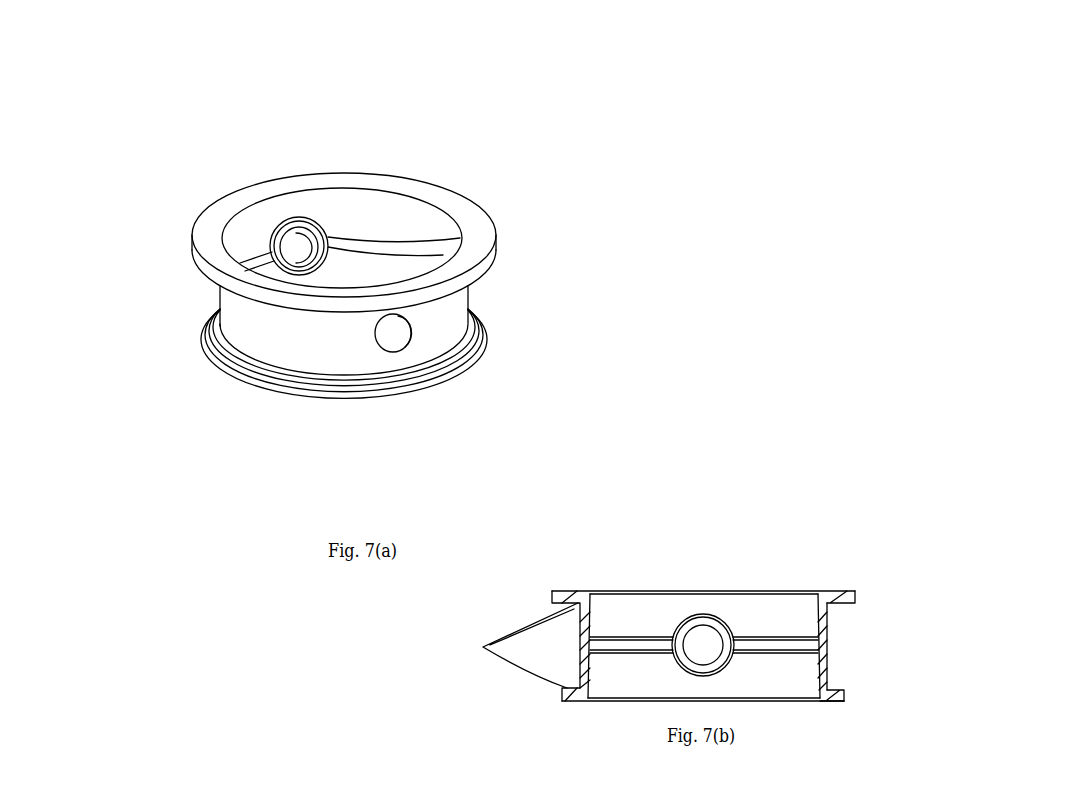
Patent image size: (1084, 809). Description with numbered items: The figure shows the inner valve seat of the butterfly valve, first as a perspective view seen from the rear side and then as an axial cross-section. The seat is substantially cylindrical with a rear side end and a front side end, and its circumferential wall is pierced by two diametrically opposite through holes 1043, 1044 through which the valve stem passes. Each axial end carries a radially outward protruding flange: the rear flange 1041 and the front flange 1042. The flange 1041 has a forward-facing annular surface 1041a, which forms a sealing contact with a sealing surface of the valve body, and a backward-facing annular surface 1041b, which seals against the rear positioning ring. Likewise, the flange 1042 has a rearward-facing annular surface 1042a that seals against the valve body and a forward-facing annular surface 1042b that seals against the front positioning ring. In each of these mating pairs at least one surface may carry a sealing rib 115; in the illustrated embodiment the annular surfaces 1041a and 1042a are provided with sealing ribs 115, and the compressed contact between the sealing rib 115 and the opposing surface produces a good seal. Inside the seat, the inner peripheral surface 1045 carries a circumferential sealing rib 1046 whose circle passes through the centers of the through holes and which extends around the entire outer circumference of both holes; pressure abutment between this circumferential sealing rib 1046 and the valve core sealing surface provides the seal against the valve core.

In FIG. 7A, the flange 1041 is at (413, 193).
In FIG. 7A, the annular surface 1041a is at (487, 260).
In FIG. 7B, the annular surface 1041a is at (850, 603).
In FIG. 7A, the annular surface 1041b is at (457, 213).
In FIG. 7B, the annular surface 1041b is at (833, 590).
In FIG. 7A, the flange 1042 is at (427, 377).
In FIG. 7A, the annular surface 1042a is at (487, 338).
In FIG. 7B, the annular surface 1042a is at (840, 690).
In FIG. 7A, the annular surface 1042b is at (467, 362).
In FIG. 7B, the annular surface 1042b is at (833, 702).
In FIG. 7A, the through hole 1043 is at (293, 247).
In FIG. 7A, the through hole 1044 is at (397, 335).
In FIG. 7A, the inner peripheral surface 1045 is at (253, 225).
In FIG. 7A, the circumferential sealing rib 1046 is at (240, 262).
In FIG. 7B, the circumferential sealing rib 1046 is at (635, 647).
In FIG. 7B, the sealing rib 115 is at (505, 645).